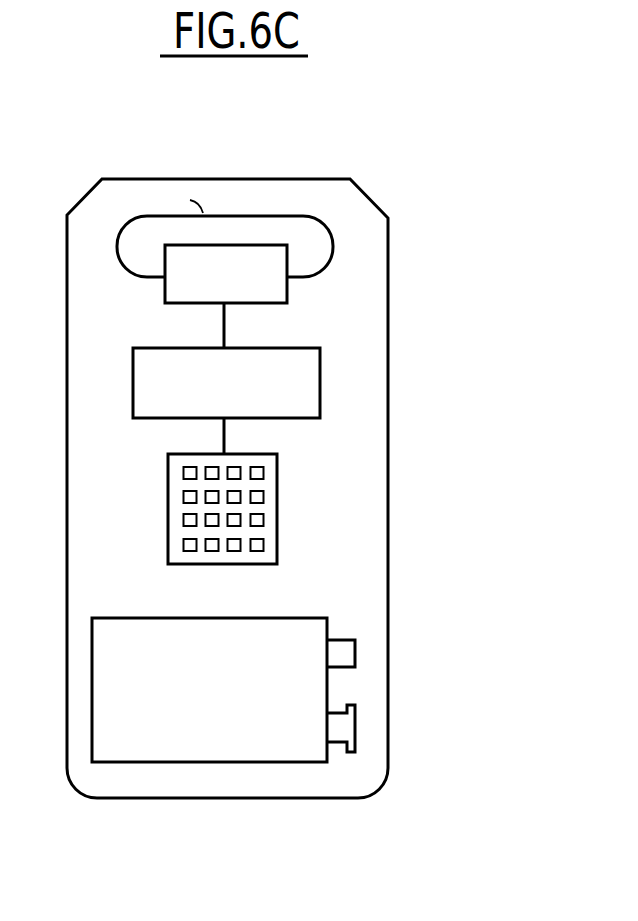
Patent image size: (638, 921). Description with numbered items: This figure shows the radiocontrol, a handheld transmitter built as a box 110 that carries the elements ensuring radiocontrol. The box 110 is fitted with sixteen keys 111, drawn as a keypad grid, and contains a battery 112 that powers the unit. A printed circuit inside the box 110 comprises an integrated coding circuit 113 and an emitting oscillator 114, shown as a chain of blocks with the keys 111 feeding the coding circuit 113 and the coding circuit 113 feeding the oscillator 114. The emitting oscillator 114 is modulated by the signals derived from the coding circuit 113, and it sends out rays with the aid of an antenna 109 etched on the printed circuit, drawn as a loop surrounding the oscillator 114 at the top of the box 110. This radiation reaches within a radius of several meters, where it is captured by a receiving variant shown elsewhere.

The antenna 109 is at (300, 216).
The box 110 is at (395, 580).
The keys 111 is at (270, 485).
The battery 112 is at (305, 698).
The integrated coding circuit 113 is at (320, 378).
The emitting oscillator 114 is at (287, 289).